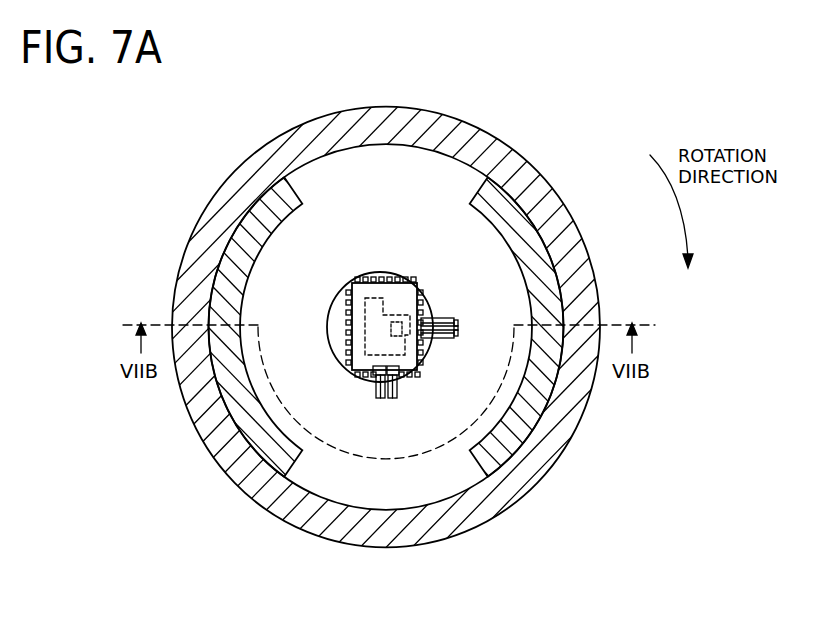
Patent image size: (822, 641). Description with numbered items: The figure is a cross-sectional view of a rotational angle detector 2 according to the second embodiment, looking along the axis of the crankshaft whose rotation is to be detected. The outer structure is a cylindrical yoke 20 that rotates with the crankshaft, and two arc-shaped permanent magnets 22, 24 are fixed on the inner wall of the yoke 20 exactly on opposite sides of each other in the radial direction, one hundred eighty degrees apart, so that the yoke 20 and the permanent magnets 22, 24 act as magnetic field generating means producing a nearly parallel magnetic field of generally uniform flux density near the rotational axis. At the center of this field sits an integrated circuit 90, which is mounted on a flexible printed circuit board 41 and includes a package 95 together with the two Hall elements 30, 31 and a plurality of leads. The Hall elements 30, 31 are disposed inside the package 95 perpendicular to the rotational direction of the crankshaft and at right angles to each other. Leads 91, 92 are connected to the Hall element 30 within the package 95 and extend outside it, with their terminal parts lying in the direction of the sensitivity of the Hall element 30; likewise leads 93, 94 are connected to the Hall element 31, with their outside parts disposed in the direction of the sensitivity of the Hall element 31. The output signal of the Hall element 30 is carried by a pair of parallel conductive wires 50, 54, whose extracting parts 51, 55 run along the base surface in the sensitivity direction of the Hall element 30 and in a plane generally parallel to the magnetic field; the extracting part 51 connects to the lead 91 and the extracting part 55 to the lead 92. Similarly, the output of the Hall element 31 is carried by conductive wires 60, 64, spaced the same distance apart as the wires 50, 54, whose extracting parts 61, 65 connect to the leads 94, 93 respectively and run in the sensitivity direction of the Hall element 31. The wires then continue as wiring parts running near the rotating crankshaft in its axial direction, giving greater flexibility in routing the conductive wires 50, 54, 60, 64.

The rotational angle detector 2 is at (559, 111).
The cylindrical yoke 20 is at (389, 112).
The permanent magnet 22 is at (270, 196).
The permanent magnet 24 is at (498, 450).
The Hall element 30 is at (376, 292).
The Hall element 31 is at (366, 354).
The flexible printed circuit board 41 is at (337, 307).
The conductive wire 50 is at (452, 318).
The extracting part 51 is at (458, 319).
The conductive wire 54 is at (456, 340).
The extracting part 55 is at (457, 334).
The conductive wire 60 is at (396, 399).
The extracting part 61 is at (390, 399).
The conductive wire 64 is at (377, 399).
The extracting part 65 is at (380, 399).
The integrated circuit 90 is at (361, 277).
The lead 91 is at (424, 309).
The lead 92 is at (424, 368).
The lead 93 is at (370, 381).
The lead 94 is at (402, 379).
The package 95 is at (414, 277).